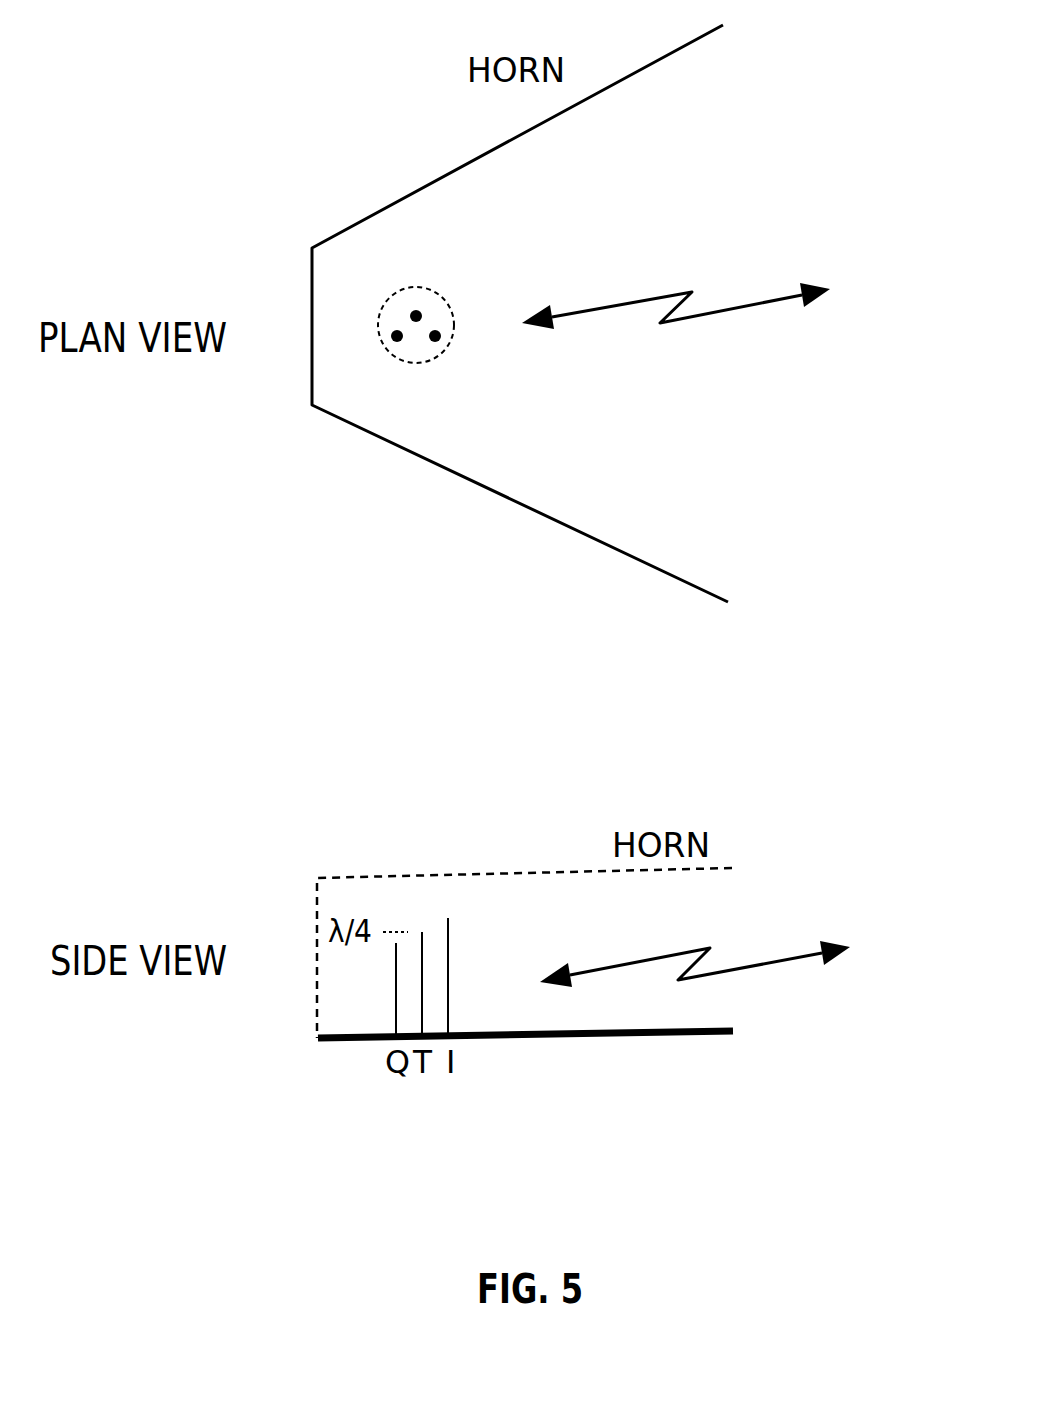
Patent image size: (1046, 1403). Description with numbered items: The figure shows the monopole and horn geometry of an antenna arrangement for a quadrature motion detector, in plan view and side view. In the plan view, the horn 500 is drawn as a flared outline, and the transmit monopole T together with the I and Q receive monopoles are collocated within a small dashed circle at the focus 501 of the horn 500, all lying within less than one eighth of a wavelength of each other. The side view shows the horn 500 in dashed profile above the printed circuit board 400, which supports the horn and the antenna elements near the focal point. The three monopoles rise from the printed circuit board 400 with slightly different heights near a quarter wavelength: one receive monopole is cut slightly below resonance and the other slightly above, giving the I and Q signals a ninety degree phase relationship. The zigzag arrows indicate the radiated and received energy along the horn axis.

The horn 500 is at (442, 177).
The focus of the horn 501 is at (442, 297).
The printed circuit board 400 is at (695, 1035).